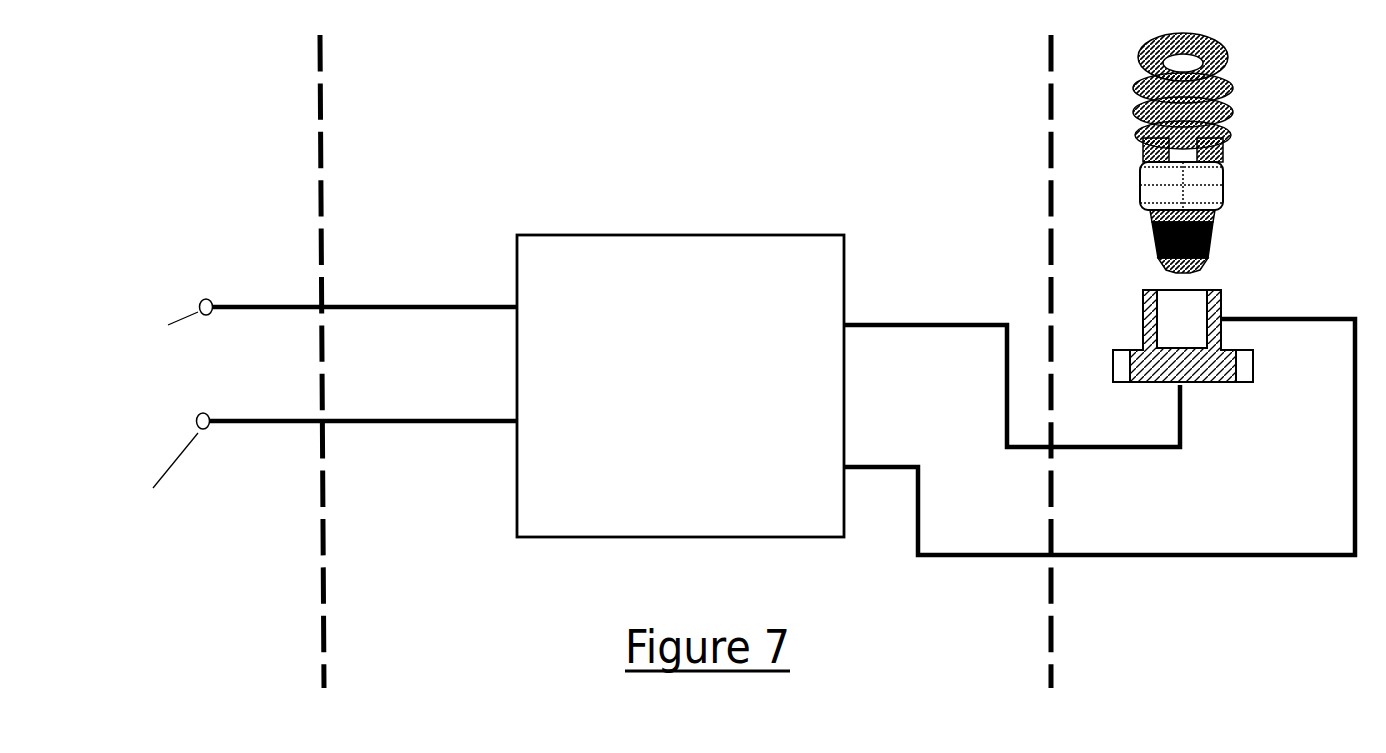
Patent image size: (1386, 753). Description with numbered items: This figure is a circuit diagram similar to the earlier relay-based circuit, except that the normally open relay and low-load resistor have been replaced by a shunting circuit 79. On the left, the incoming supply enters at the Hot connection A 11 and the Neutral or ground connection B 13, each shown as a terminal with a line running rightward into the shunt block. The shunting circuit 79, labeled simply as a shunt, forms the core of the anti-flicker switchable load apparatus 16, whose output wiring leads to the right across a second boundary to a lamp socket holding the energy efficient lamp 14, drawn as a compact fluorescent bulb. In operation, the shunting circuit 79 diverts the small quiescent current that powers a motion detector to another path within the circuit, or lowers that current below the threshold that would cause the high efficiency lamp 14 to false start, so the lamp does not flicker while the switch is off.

The Hot connection A 11 is at (302, 317).
The Neutral (or ground) connection B 13 is at (288, 472).
The shunting circuit 79 is at (608, 233).
The anti-flicker switchable load apparatus 16 is at (900, 285).
The energy efficient lamp 14 is at (1225, 218).